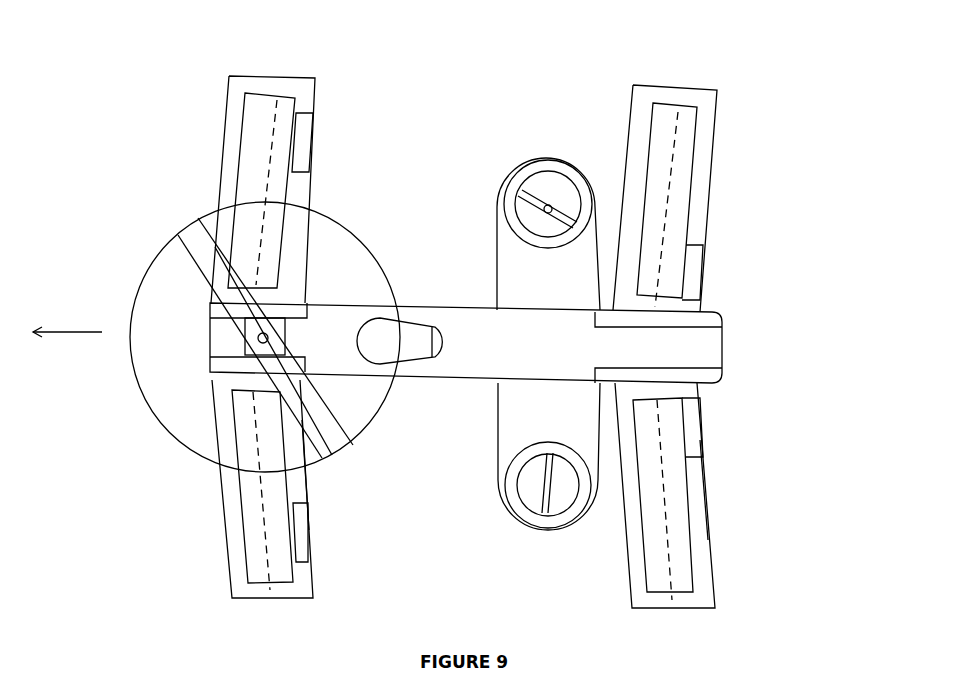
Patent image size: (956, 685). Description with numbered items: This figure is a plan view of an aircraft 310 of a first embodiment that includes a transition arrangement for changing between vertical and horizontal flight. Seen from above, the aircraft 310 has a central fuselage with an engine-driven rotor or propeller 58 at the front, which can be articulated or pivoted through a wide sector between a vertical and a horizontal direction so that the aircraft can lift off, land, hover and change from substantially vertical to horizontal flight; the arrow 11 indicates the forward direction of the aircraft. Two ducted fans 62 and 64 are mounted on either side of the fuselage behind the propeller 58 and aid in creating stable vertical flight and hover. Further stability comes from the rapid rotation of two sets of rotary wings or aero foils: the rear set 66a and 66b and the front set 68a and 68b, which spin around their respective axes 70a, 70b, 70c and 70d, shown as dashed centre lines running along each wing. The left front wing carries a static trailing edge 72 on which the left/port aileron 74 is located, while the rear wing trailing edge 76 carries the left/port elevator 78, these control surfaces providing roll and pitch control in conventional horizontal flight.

The aircraft 310 is at (145, 532).
The flight direction arrow 11 is at (67, 321).
The engine-driven rotor or propeller 58 is at (352, 228).
The ducted fan 62 is at (563, 502).
The ducted fan 64 is at (535, 185).
The rotary wing or aero foil 66a is at (683, 577).
The rotary wing or aero foil 66b is at (685, 105).
The rotary wing or aero foil 68a is at (278, 572).
The rotary wing or aero foil 68b is at (283, 97).
The axis 70a is at (273, 598).
The axis 70b is at (273, 78).
The axis 70c is at (673, 610).
The axis 70d is at (677, 107).
The left front wing static trailing edge 72 is at (307, 487).
The left/port aileron 74 is at (302, 535).
The rear wing trailing edge 76 is at (708, 527).
The left/port elevator 78 is at (700, 420).